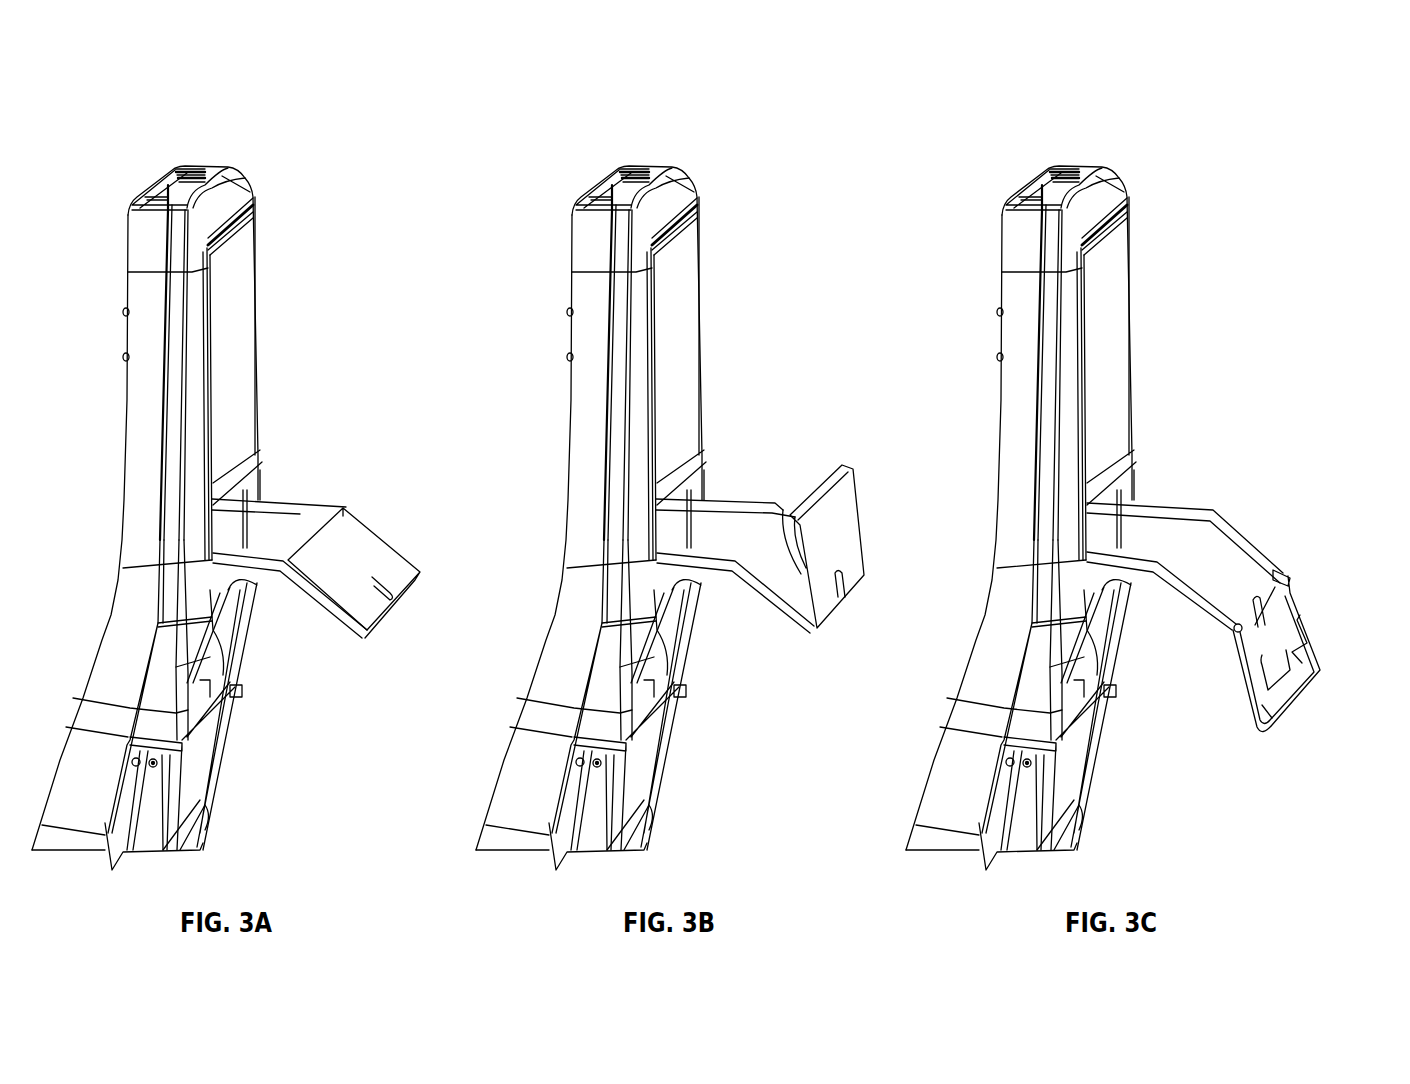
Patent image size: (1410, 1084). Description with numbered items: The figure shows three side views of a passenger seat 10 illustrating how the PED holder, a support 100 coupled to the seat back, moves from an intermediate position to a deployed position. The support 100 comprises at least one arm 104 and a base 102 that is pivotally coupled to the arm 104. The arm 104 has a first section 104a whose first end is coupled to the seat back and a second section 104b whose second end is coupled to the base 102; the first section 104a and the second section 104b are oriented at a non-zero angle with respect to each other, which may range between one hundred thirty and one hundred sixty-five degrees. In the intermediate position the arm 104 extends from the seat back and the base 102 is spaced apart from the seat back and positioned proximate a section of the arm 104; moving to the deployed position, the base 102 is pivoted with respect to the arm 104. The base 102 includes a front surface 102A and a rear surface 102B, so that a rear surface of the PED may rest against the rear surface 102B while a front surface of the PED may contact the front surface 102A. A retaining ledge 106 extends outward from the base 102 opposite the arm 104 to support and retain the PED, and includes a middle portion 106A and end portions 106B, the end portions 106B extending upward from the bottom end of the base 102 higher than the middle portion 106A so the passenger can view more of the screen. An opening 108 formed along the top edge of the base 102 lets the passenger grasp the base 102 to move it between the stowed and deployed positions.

In FIG. 3A, the seat 10 is at (245, 103).
In FIG. 3B, the seat 10 is at (650, 101).
In FIG. 3C, the seat 10 is at (1039, 116).
In FIG. 3A, the support 100 is at (339, 547).
In FIG. 3B, the support 100 is at (792, 525).
In FIG. 3C, the support 100 is at (1247, 562).
In FIG. 3A, the base 102 is at (459, 497).
In FIG. 3B, the base 102 is at (869, 467).
In FIG. 3C, the base 102 is at (1237, 734).
In FIG. 3C, the front surface 102A is at (1282, 632).
In FIG. 3A, the rear surface 102B is at (362, 543).
In FIG. 3B, the rear surface 102B is at (840, 545).
In FIG. 3A, the arm 104 is at (299, 565).
In FIG. 3B, the arm 104 is at (740, 564).
In FIG. 3C, the arm 104 is at (1185, 564).
In FIG. 3A, the first section 104a is at (262, 565).
In FIG. 3B, the first section 104a is at (705, 570).
In FIG. 3C, the first section 104a is at (1170, 502).
In FIG. 3A, the second section 104b is at (337, 608).
In FIG. 3B, the second section 104b is at (768, 610).
In FIG. 3C, the second section 104b is at (1188, 600).
In FIG. 3A, the retaining ledge 106 is at (377, 558).
In FIG. 3B, the retaining ledge 106 is at (856, 516).
In FIG. 3C, the retaining ledge 106 is at (1284, 621).
In FIG. 3C, the middle portion 106A is at (1305, 684).
In FIG. 3C, the end portions 106B is at (1246, 690).
In FIG. 3A, the opening 108 is at (396, 598).
In FIG. 3B, the opening 108 is at (840, 584).
In FIG. 3C, the opening 108 is at (1253, 585).